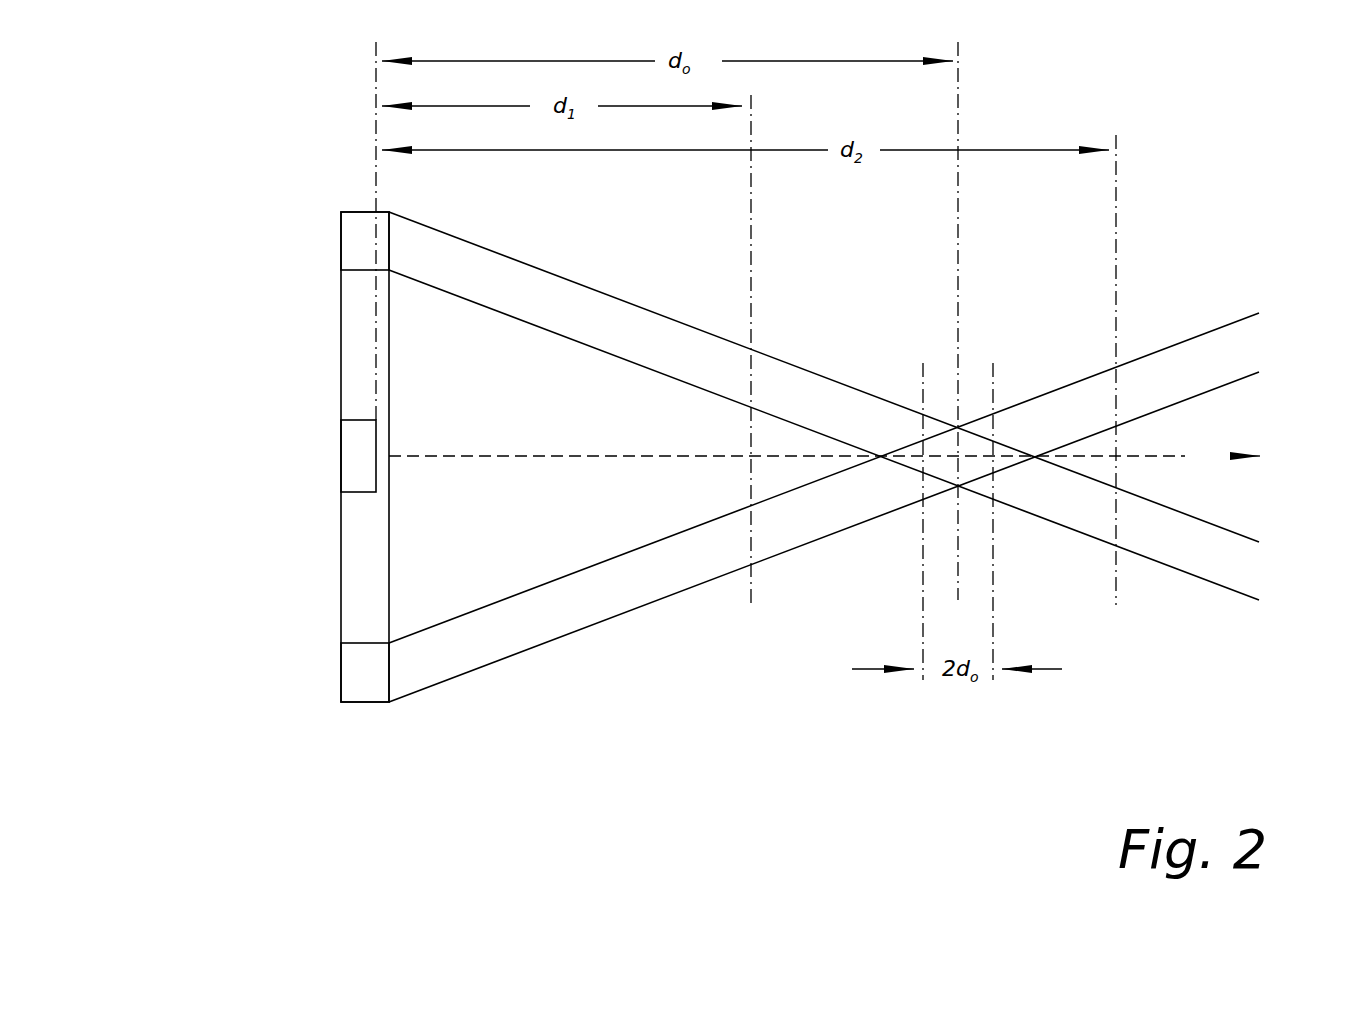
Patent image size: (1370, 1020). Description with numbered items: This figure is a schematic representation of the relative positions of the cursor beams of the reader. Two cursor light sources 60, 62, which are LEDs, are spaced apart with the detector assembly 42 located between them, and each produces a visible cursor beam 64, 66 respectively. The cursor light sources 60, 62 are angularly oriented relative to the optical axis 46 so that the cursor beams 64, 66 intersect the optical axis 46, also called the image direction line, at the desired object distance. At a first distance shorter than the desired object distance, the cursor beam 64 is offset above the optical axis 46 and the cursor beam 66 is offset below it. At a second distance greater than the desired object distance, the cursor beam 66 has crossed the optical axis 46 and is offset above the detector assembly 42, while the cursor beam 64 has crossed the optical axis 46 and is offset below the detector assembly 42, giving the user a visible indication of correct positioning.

The cursor light source 60 is at (341, 237).
The cursor light source 62 is at (341, 672).
The detector assembly 42 is at (352, 452).
The cursor beam 64 is at (608, 295).
The cursor beam 66 is at (531, 650).
The optical axis 46 is at (1185, 456).